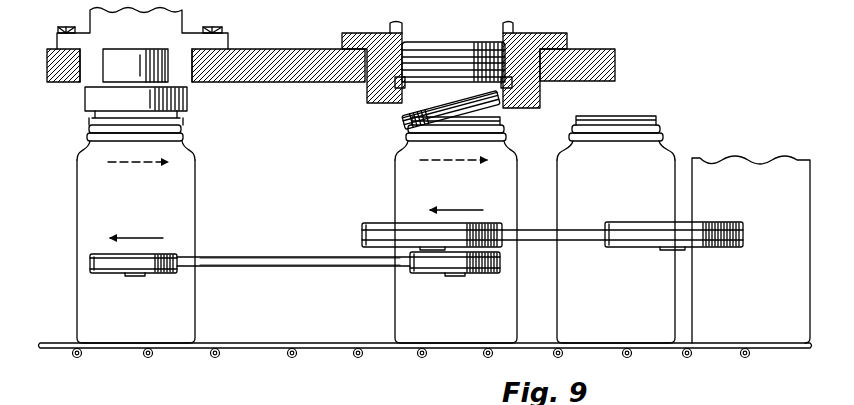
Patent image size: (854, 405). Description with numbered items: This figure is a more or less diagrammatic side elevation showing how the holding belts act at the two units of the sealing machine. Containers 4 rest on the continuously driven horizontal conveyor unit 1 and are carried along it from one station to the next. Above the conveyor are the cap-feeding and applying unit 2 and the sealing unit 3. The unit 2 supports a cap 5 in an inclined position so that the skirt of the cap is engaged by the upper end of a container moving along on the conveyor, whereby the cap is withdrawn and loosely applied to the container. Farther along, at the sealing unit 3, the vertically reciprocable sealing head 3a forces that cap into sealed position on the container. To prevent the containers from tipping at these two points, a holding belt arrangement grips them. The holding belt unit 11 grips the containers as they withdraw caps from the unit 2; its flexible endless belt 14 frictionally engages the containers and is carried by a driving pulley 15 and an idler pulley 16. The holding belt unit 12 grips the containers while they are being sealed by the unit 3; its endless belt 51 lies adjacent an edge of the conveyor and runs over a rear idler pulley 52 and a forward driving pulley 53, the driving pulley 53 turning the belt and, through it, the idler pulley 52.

The conveyor unit 1 is at (262, 342).
The cap-feeding and applying unit 2 is at (524, 40).
The sealing unit 3 is at (163, 23).
The sealing head 3a is at (190, 97).
The container 4 is at (178, 173).
The cap 5 is at (439, 45).
The holding belt unit 11 is at (534, 226).
The holding belt unit 12 is at (285, 254).
The endless belt 14 is at (582, 236).
The driving pulley 15 is at (700, 224).
The idler pulley 16 is at (380, 224).
The endless belt 51 is at (236, 258).
The rear idler pulley 52 is at (480, 274).
The forward driving pulley 53 is at (170, 273).